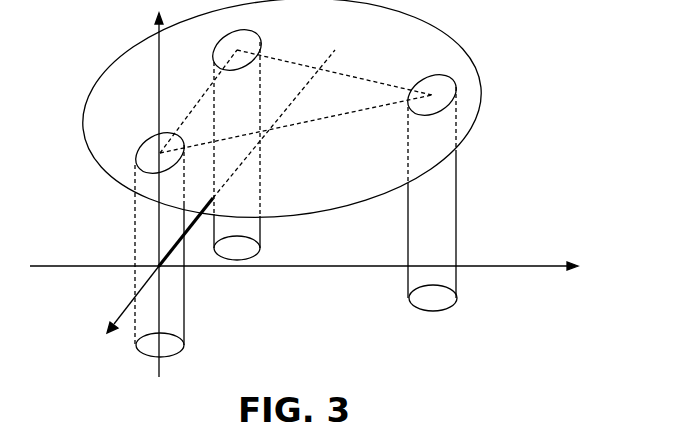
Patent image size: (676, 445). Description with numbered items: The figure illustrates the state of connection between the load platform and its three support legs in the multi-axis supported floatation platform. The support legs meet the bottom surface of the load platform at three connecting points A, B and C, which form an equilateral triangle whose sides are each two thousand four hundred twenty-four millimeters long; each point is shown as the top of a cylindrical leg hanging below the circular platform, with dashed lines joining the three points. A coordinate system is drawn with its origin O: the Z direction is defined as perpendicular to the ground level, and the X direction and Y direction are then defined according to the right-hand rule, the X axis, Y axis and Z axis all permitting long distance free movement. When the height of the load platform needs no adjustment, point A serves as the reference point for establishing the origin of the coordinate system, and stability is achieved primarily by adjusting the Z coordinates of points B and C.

The connecting point A is at (151, 240).
The connecting point B is at (245, 138).
The connecting point C is at (437, 188).
The coordinate origin O is at (169, 282).
The X direction X is at (210, 191).
The Y direction Y is at (304, 253).
The Z direction Z is at (139, 191).